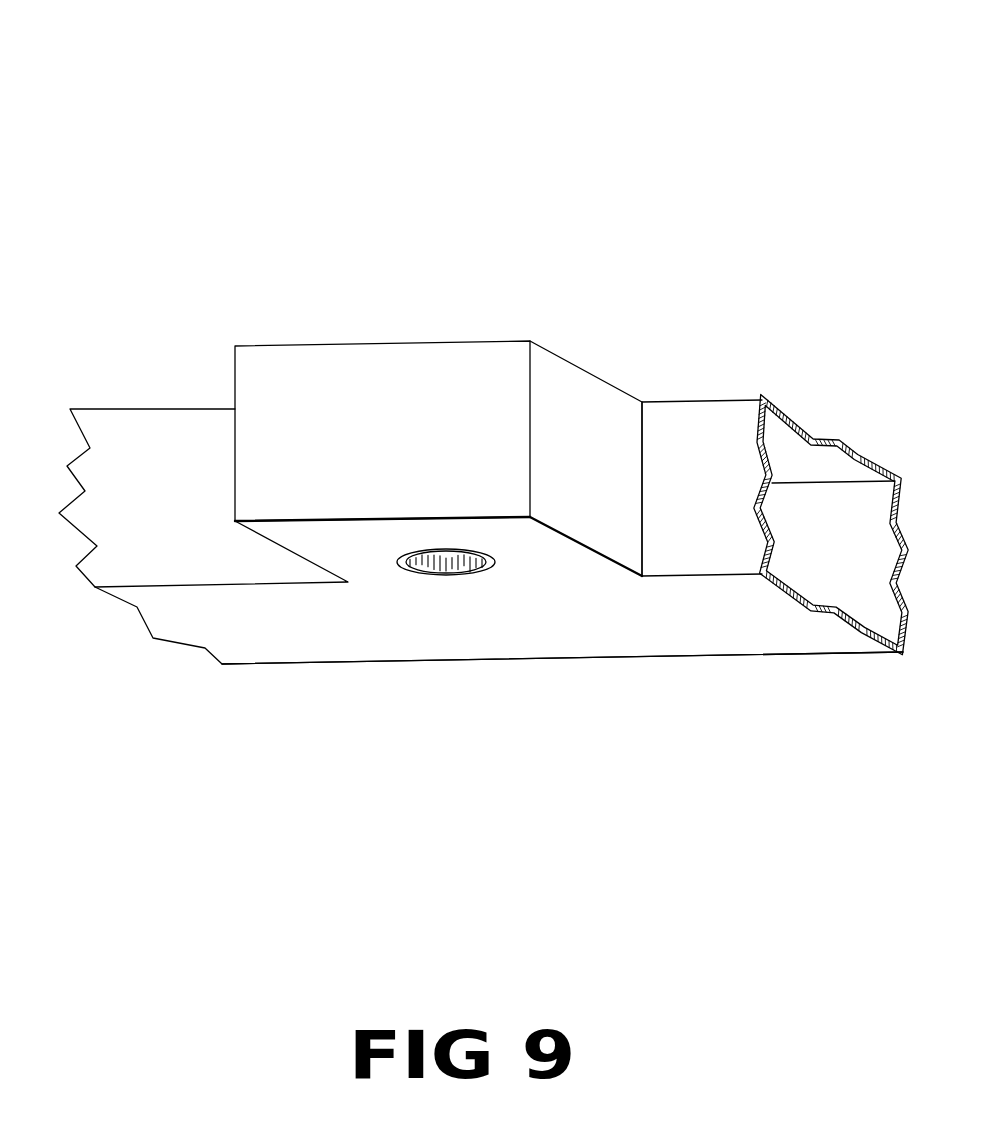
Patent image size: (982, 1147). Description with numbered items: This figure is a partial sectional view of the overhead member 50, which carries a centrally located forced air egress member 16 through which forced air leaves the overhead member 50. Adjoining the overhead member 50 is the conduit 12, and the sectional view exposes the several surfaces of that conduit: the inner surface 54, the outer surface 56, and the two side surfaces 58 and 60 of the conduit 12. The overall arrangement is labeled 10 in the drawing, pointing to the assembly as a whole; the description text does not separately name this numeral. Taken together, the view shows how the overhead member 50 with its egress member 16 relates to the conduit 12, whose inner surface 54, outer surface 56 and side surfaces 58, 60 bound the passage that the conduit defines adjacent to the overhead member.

The duct assembly 10 is at (480, 153).
The conduit 12 is at (687, 418).
The forced air egress member 16 is at (448, 575).
The overhead member 50 is at (488, 357).
The inner surface 54 is at (805, 633).
The outer surface 56 is at (848, 450).
The side surface 58 is at (695, 550).
The side surface 60 is at (863, 593).